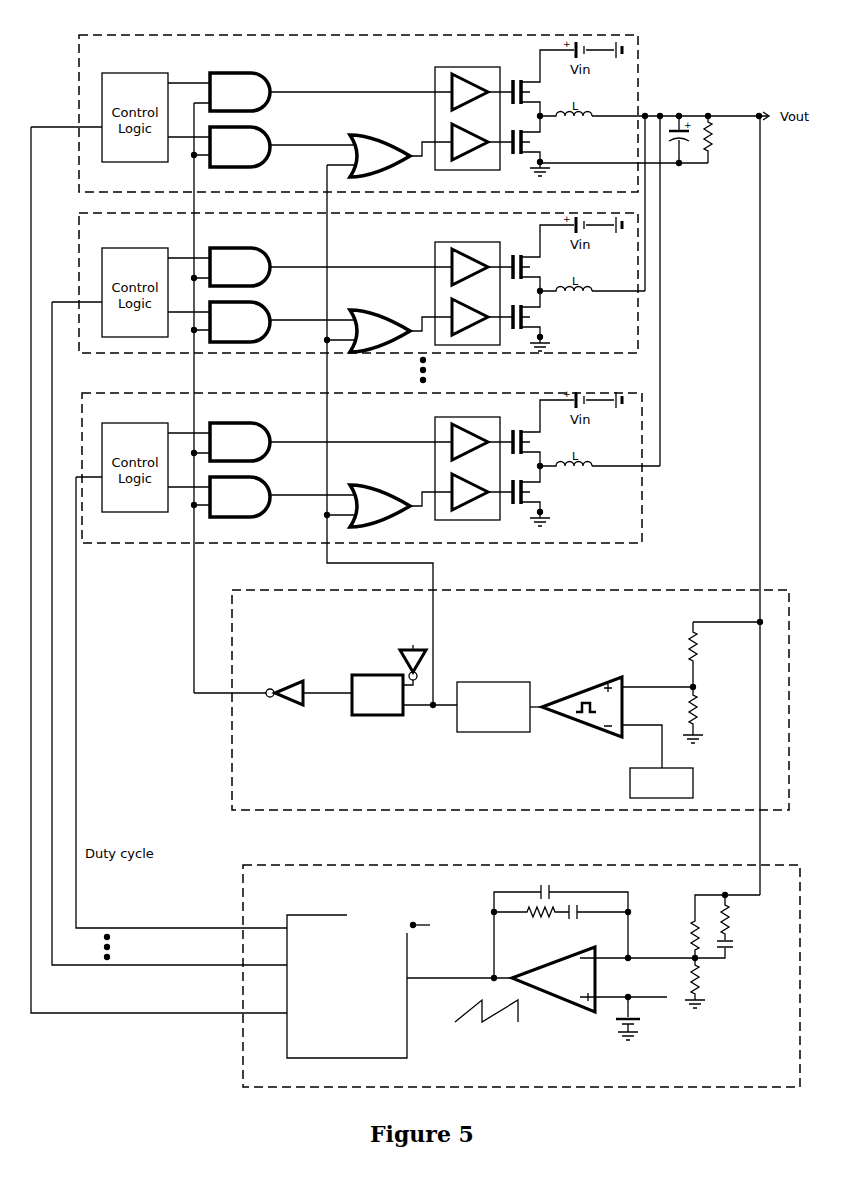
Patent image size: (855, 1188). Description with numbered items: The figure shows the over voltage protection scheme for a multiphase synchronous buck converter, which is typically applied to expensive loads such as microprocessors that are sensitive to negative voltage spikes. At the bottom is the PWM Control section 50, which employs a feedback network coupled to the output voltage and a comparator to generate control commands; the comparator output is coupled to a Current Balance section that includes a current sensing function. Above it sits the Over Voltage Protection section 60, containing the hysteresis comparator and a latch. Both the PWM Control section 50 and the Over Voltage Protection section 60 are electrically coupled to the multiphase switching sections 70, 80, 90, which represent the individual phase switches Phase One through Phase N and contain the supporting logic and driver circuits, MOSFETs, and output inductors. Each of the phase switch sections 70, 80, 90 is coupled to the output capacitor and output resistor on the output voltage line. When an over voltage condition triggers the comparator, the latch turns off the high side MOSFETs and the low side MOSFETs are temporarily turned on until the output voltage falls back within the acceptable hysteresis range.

The multiphase switching section 90 is at (334, 113).
The multiphase switching section 80 is at (348, 283).
The multiphase switching section 70 is at (368, 466).
The over voltage protection section 60 is at (500, 700).
The PWM control section 50 is at (521, 976).